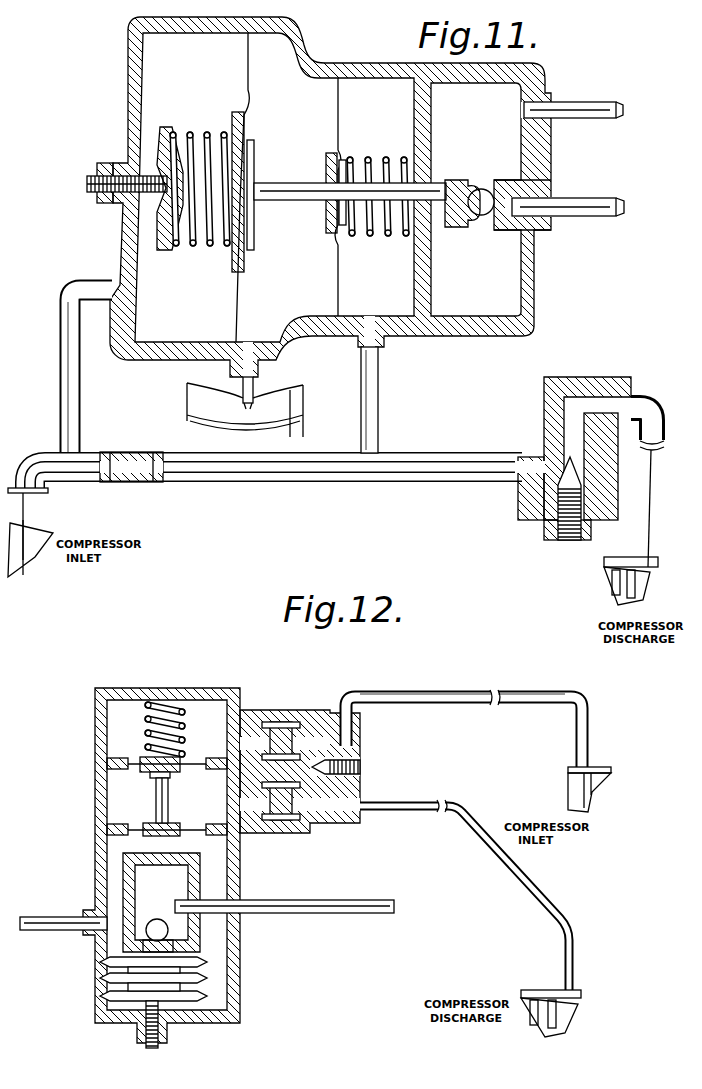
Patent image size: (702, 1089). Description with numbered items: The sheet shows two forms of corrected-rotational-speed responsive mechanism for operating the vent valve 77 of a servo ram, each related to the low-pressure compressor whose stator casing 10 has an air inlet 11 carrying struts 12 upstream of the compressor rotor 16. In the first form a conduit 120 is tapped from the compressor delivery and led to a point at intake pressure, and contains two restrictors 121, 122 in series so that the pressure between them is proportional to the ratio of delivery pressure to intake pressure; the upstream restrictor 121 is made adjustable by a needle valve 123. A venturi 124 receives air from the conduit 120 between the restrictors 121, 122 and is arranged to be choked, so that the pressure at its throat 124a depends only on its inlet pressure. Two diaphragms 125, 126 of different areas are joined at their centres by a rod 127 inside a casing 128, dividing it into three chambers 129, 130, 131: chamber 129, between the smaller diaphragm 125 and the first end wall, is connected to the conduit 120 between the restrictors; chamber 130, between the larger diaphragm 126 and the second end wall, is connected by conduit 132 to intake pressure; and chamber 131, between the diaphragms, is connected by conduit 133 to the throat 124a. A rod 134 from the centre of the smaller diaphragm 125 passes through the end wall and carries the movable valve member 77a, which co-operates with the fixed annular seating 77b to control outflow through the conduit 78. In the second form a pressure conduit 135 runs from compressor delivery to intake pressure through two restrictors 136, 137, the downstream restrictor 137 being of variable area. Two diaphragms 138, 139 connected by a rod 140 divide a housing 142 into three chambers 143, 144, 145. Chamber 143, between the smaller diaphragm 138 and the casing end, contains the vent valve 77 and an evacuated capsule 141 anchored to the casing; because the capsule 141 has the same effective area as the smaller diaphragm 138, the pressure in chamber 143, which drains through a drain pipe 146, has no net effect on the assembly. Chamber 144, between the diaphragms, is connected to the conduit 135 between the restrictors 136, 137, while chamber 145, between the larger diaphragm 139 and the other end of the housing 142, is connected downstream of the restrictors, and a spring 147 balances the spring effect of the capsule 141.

In FIG. 11, the stator casing 10 is at (42, 528).
In FIG. 12, the stator casing 10 is at (586, 770).
In FIG. 11, the air inlet 11 is at (20, 553).
In FIG. 12, the air inlet 11 is at (570, 790).
In FIG. 11, the struts 12 is at (35, 572).
In FIG. 12, the struts 12 is at (586, 812).
In FIG. 11, the compressor rotor 16 is at (612, 592).
In FIG. 12, the compressor rotor 16 is at (556, 1018).
In FIG. 11, the vent valve 77 is at (487, 232).
In FIG. 12, the vent valve 77 is at (138, 928).
In FIG. 11, the movable valve member 77a is at (483, 187).
In FIG. 12, the movable valve member 77a is at (168, 928).
In FIG. 11, the fixed annular seating 77b is at (545, 240).
In FIG. 12, the fixed annular seating 77b is at (157, 918).
In FIG. 11, the conduit 78 is at (606, 200).
In FIG. 12, the conduit 78 is at (372, 915).
In FIG. 11, the conduit 120 is at (300, 483).
In FIG. 11, the upstream restrictor 121 is at (548, 481).
In FIG. 11, the downstream restrictor 122 is at (133, 483).
In FIG. 11, the needle valve 123 is at (562, 460).
In FIG. 11, the venturi 124 is at (195, 423).
In FIG. 11, the throat 124a is at (247, 408).
In FIG. 11, the smaller diaphragm 125 is at (338, 116).
In FIG. 11, the larger diaphragm 126 is at (246, 80).
In FIG. 11, the rod 127 is at (293, 202).
In FIG. 11, the casing 128 is at (128, 67).
In FIG. 11, the chamber 129 is at (375, 110).
In FIG. 11, the chamber 130 is at (170, 287).
In FIG. 11, the chamber 131 is at (292, 90).
In FIG. 11, the conduit 132 is at (81, 372).
In FIG. 11, the conduit 133 is at (262, 381).
In FIG. 11, the rod 134 is at (437, 210).
In FIG. 12, the pressure conduit 135 is at (411, 800).
In FIG. 12, the upstream restrictor 136 is at (360, 812).
In FIG. 12, the downstream restrictor 137 is at (317, 757).
In FIG. 12, the smaller diaphragm 138 is at (137, 830).
In FIG. 12, the larger diaphragm 139 is at (127, 758).
In FIG. 12, the rod 140 is at (160, 790).
In FIG. 12, the evacuated capsule 141 is at (185, 1003).
In FIG. 12, the housing 142 is at (128, 688).
In FIG. 12, the chamber 143 is at (215, 955).
In FIG. 12, the chamber 144 is at (198, 806).
In FIG. 12, the chamber 145 is at (207, 720).
In FIG. 12, the drain pipe 146 is at (35, 915).
In FIG. 12, the spring 147 is at (170, 712).